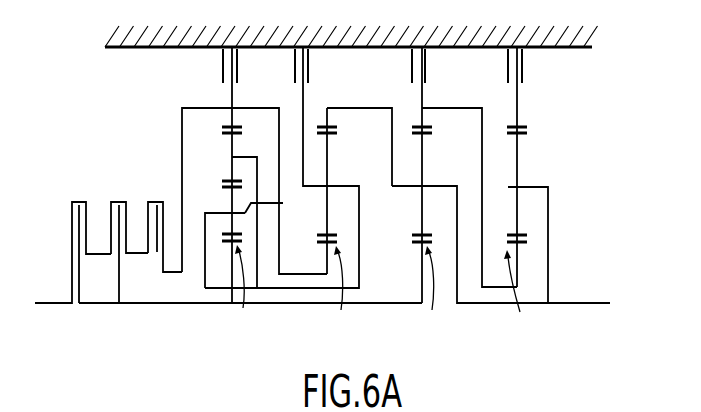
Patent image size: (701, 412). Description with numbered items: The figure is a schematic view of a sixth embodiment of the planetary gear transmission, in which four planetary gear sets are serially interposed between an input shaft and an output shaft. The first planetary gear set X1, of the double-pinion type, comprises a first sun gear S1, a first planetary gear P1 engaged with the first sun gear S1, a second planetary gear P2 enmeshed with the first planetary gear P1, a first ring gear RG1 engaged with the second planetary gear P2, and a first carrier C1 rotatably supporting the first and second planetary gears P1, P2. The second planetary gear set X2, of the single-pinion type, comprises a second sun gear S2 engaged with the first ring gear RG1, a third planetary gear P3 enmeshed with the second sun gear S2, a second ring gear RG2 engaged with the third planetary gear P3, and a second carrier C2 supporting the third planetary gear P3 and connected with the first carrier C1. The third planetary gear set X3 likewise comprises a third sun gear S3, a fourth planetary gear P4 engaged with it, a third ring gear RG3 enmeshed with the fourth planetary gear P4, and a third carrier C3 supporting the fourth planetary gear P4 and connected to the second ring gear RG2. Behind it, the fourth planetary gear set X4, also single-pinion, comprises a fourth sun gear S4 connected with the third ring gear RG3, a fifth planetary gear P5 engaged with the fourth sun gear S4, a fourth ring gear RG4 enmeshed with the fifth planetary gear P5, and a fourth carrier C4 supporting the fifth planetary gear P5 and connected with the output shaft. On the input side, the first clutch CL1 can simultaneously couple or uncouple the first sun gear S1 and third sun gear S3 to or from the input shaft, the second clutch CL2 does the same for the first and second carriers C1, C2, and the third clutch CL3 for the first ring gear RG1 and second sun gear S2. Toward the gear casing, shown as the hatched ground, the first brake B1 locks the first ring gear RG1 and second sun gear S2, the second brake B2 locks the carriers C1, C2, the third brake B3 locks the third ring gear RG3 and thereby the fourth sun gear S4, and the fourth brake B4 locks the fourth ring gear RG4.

The first brake B1 is at (217, 69).
The second brake B2 is at (313, 71).
The third brake B3 is at (431, 71).
The fourth brake B4 is at (526, 71).
The first ring gear RG1 is at (231, 112).
The second ring gear RG2 is at (329, 122).
The third ring gear RG3 is at (424, 122).
The fourth ring gear RG4 is at (520, 123).
The first planetary gear P1 is at (231, 198).
The second planetary gear P2 is at (233, 147).
The third planetary gear P3 is at (328, 168).
The fourth planetary gear P4 is at (423, 168).
The fifth planetary gear P5 is at (518, 168).
The first sun gear S1 is at (232, 256).
The second sun gear S2 is at (326, 252).
The third sun gear S3 is at (421, 252).
The fourth sun gear S4 is at (520, 257).
The first carrier C1 is at (273, 204).
The second carrier C2 is at (350, 187).
The third carrier C3 is at (435, 187).
The fourth carrier C4 is at (544, 187).
The first clutch CL1 is at (78, 200).
The second clutch CL2 is at (127, 181).
The third clutch CL3 is at (156, 200).
The first planetary gear set X1 is at (249, 291).
The second planetary gear set X2 is at (349, 292).
The third planetary gear set X3 is at (440, 292).
The fourth planetary gear set X4 is at (525, 294).